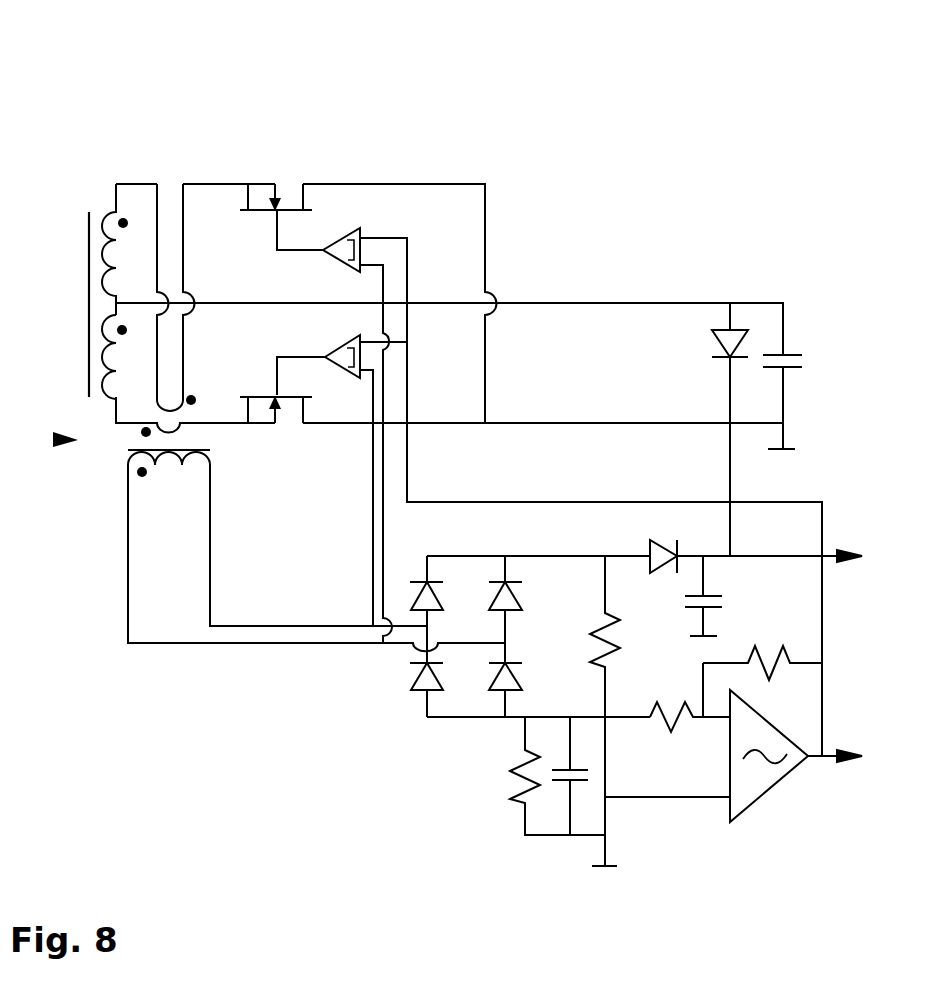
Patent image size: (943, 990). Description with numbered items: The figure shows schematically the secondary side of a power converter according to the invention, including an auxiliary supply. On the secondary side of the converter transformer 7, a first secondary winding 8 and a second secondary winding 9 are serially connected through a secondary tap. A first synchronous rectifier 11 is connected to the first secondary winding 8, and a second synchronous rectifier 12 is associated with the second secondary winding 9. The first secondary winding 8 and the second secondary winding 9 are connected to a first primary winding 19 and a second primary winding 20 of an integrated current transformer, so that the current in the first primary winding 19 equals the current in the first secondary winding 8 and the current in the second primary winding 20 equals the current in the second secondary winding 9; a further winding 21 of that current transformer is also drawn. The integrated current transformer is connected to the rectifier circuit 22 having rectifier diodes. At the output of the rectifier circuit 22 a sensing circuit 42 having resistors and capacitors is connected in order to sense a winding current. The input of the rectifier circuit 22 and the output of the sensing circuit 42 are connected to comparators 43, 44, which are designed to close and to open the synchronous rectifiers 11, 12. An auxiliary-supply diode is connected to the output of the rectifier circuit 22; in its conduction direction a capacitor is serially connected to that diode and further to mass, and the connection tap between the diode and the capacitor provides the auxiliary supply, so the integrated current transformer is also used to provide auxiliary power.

The converter transformer 7 is at (72, 218).
The first secondary winding 8 is at (112, 250).
The second secondary winding 9 is at (123, 363).
The first synchronous rectifier 11 is at (293, 147).
The second synchronous rectifier 12 is at (285, 430).
The first primary winding 19 is at (166, 404).
The second primary winding 20 is at (143, 433).
The auxiliary winding 21 is at (167, 465).
The rectifier circuit 22 is at (407, 718).
The sensing circuit 42 is at (672, 853).
The comparator 43 is at (338, 233).
The comparator 44 is at (352, 377).